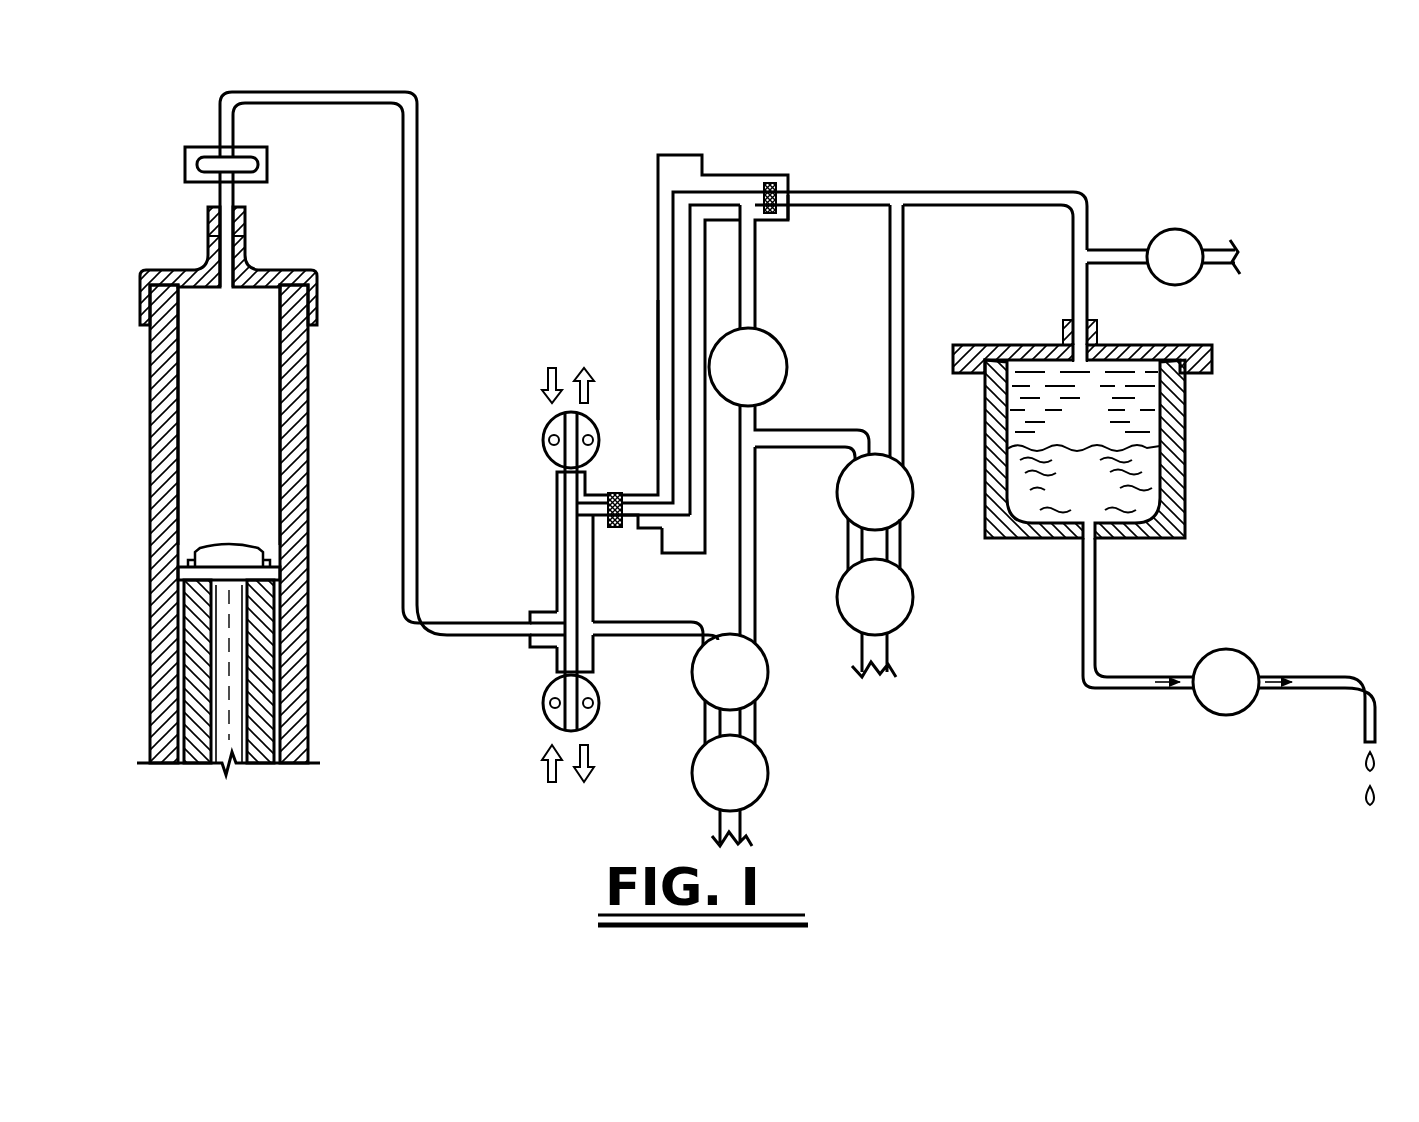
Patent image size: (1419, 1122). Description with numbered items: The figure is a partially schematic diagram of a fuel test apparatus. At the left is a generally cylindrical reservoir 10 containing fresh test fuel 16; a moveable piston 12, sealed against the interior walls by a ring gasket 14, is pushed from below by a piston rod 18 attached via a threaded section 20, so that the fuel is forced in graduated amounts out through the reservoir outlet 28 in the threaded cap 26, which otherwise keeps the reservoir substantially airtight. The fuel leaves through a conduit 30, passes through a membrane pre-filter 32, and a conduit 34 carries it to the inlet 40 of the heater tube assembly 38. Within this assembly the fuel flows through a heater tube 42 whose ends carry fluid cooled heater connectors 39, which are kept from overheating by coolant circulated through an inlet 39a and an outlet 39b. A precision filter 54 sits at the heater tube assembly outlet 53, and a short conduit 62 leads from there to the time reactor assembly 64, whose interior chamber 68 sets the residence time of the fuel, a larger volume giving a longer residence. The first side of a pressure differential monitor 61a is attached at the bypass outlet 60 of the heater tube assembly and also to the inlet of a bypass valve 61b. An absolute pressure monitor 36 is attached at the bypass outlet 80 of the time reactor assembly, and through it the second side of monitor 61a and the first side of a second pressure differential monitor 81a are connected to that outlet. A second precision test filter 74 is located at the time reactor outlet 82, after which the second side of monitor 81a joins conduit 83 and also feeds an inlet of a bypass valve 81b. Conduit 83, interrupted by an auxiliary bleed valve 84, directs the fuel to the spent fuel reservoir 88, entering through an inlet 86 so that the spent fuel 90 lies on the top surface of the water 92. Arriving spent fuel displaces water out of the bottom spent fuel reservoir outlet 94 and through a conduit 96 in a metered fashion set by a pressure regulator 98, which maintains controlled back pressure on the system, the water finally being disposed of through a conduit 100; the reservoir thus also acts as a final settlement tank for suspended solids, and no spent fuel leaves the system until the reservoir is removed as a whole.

The reservoir 10 is at (147, 483).
The piston 12 is at (282, 575).
The ring gasket 14 is at (283, 548).
The test fuel 16 is at (237, 466).
The piston rod 18 is at (264, 628).
The threaded section 20 is at (258, 740).
The threaded cap 26 is at (142, 278).
The reservoir outlet 28 is at (205, 236).
The conduit 30 is at (236, 192).
The membrane pre-filter 32 is at (216, 148).
The conduit 34 is at (418, 150).
The absolute pressure monitor 36 is at (785, 352).
The heater tube assembly 38 is at (555, 542).
The fluid cooled heater connectors 39 is at (545, 452).
The inlet 39a is at (540, 378).
The outlet 39b is at (590, 378).
The inlet 40 is at (528, 617).
The heater tube 42 is at (578, 656).
The outlet 53 is at (628, 528).
The precision filter 54 is at (607, 495).
The bypass outlet 60 is at (613, 530).
The pressure differential monitor 61a is at (770, 680).
The bypass valve 61b is at (770, 780).
The conduit 62 is at (652, 492).
The time reactor assembly 64 is at (652, 330).
The interior chamber 68 is at (634, 334).
The second precision test filter 74 is at (768, 183).
The bypass outlet 80 is at (757, 228).
The pressure differential monitor 81a is at (913, 485).
The bypass valve 81b is at (912, 605).
The outlet 82 is at (790, 208).
The conduit 83 is at (925, 190).
The auxiliary bleed valve 84 is at (1154, 241).
The inlet 86 is at (1064, 333).
The spent fuel reservoir 88 is at (1188, 440).
The spent fuel 90 is at (1099, 422).
The water 92 is at (1099, 497).
The spent fuel reservoir outlet 94 is at (1080, 547).
The conduit 96 is at (1082, 660).
The pressure regulator 98 is at (1240, 656).
The conduit 100 is at (1343, 678).